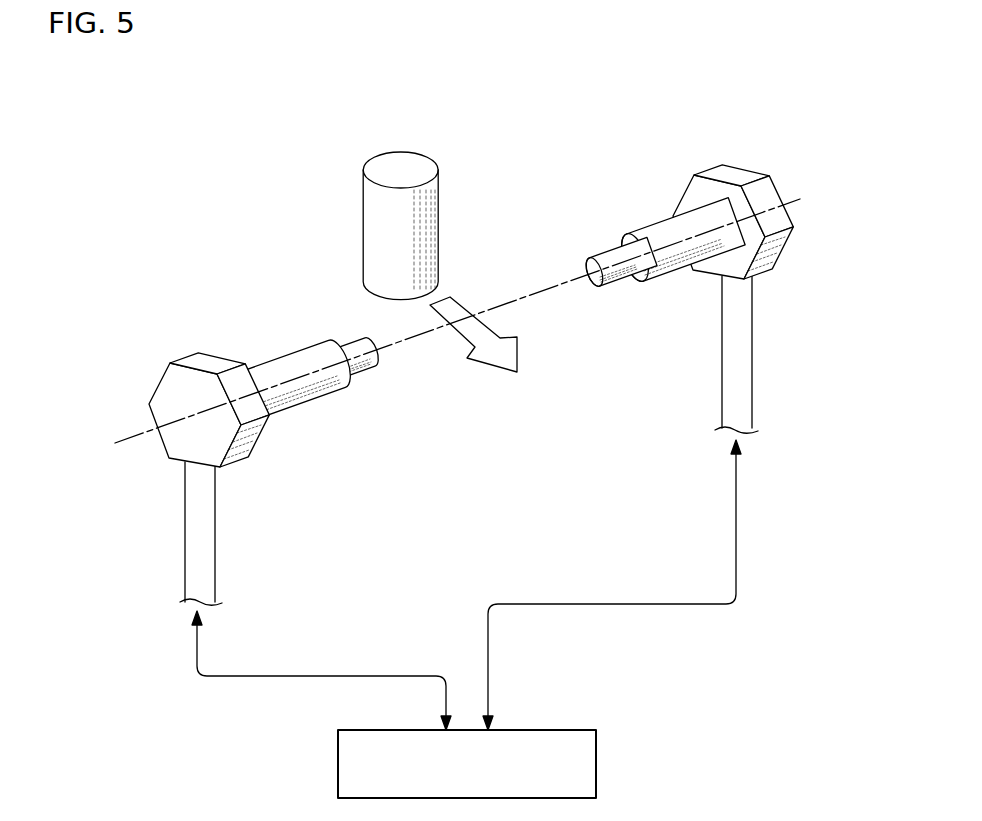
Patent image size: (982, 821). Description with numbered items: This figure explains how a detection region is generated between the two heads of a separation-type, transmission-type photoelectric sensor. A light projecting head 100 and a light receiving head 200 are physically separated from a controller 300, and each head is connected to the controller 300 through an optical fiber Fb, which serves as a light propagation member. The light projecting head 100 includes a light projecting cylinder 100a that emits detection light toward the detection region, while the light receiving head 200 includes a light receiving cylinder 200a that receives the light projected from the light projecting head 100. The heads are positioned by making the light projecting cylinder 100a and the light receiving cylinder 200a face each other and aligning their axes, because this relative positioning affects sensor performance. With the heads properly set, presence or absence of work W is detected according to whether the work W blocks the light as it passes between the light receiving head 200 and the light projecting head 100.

The light projecting head 100 is at (705, 192).
The light projecting cylinder 100a is at (668, 266).
The light receiving head 200 is at (225, 370).
The light receiving cylinder 200a is at (305, 392).
The work W is at (397, 167).
The optical fiber Fb is at (215, 572).
The controller 300 is at (597, 753).